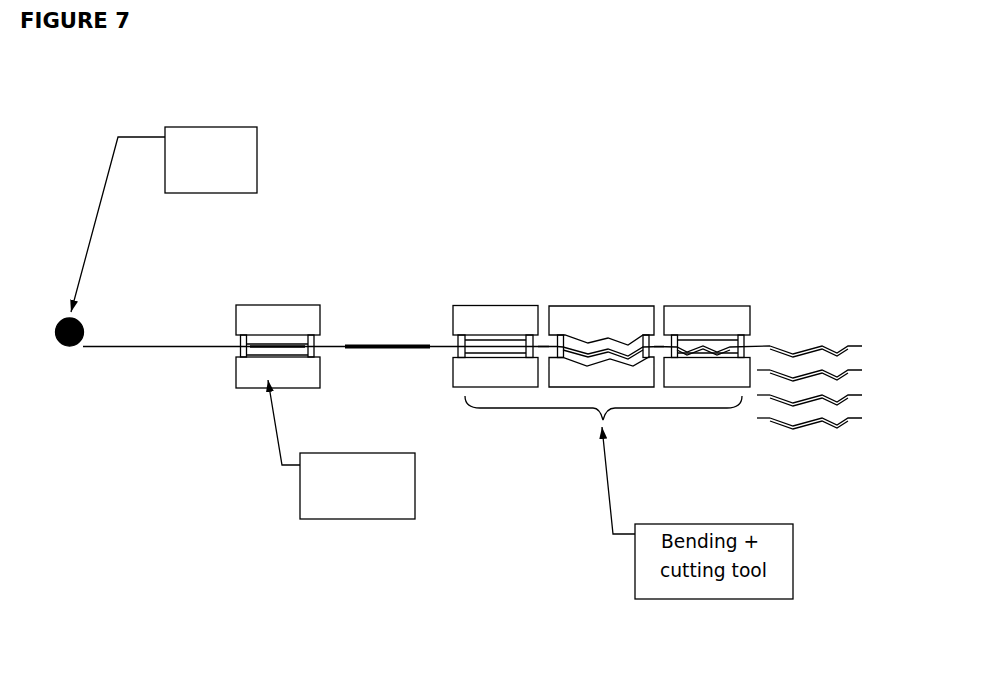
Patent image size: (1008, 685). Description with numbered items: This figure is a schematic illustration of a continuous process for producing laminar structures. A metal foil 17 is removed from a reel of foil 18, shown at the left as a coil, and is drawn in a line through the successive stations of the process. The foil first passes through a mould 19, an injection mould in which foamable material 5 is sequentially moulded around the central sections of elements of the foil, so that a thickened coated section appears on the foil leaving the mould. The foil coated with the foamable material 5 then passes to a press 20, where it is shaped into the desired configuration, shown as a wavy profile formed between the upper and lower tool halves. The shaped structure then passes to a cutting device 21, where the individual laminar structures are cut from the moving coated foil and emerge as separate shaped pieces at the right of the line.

The foamable material 5 is at (262, 348).
The metal foil 17 is at (150, 337).
The reel of foil 18 is at (78, 318).
The mould 19 is at (282, 298).
The press 20 is at (598, 298).
The cutting device 21 is at (728, 298).